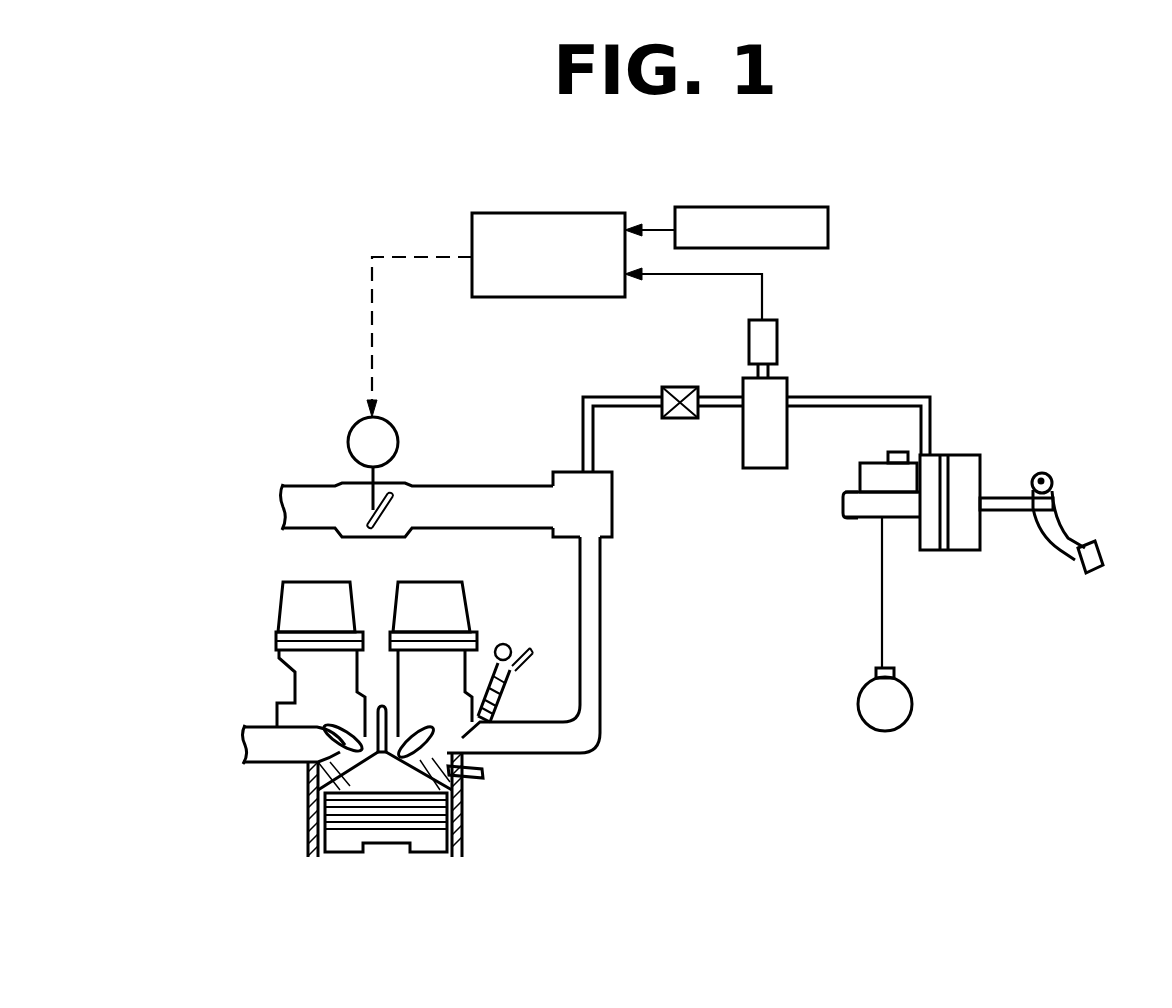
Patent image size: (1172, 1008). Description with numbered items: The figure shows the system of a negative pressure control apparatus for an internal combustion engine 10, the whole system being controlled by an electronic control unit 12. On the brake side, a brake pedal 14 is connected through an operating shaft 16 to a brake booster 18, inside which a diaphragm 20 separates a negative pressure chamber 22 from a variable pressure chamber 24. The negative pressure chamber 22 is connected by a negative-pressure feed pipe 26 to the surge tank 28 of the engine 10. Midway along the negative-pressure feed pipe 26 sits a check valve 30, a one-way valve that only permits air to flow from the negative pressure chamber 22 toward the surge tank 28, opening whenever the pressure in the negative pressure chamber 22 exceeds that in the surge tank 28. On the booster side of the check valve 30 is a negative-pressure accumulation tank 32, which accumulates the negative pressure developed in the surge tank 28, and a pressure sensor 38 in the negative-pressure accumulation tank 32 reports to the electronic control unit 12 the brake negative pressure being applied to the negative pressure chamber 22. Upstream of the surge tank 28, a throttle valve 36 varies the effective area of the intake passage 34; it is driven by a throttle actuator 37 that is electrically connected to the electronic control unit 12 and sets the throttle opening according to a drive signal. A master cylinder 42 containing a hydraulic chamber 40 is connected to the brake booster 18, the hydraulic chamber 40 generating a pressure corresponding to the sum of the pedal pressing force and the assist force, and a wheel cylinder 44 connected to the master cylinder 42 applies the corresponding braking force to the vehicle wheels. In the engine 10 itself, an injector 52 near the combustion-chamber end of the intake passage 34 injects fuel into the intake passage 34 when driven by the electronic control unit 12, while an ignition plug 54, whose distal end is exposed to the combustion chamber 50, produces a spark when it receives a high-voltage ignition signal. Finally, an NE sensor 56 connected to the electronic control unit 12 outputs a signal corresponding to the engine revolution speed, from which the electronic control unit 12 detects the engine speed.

The internal combustion engine 10 is at (395, 851).
The electronic control unit 12 is at (498, 212).
The brake pedal 14 is at (1081, 569).
The operating shaft 16 is at (1005, 516).
The brake booster 18 is at (946, 456).
The diaphragm 20 is at (952, 478).
The negative pressure chamber 22 is at (929, 538).
The variable pressure chamber 24 is at (968, 541).
The negative-pressure feed pipe 26 is at (835, 407).
The surge tank 28 is at (614, 508).
The check valve 30 is at (678, 387).
The negative-pressure accumulation tank 32 is at (758, 470).
The intake passage 34 is at (472, 488).
The throttle valve 36 is at (373, 517).
The throttle actuator 37 is at (395, 426).
The pressure sensor 38 is at (778, 336).
The hydraulic chamber 40 is at (866, 512).
The master cylinder 42 is at (843, 504).
The wheel cylinder 44 is at (876, 672).
The combustion chamber 50 is at (343, 787).
The injector 52 is at (512, 672).
The ignition plug 54 is at (381, 708).
The NE sensor 56 is at (828, 206).